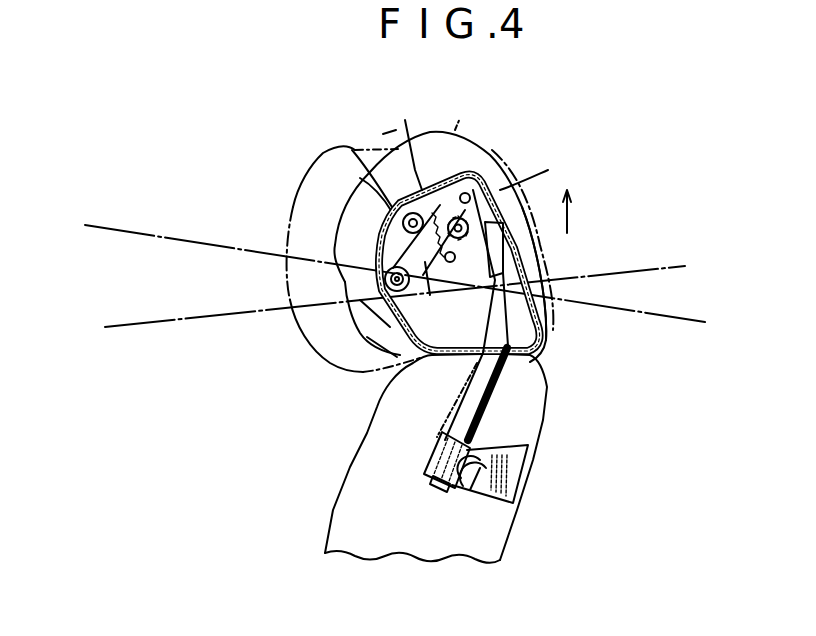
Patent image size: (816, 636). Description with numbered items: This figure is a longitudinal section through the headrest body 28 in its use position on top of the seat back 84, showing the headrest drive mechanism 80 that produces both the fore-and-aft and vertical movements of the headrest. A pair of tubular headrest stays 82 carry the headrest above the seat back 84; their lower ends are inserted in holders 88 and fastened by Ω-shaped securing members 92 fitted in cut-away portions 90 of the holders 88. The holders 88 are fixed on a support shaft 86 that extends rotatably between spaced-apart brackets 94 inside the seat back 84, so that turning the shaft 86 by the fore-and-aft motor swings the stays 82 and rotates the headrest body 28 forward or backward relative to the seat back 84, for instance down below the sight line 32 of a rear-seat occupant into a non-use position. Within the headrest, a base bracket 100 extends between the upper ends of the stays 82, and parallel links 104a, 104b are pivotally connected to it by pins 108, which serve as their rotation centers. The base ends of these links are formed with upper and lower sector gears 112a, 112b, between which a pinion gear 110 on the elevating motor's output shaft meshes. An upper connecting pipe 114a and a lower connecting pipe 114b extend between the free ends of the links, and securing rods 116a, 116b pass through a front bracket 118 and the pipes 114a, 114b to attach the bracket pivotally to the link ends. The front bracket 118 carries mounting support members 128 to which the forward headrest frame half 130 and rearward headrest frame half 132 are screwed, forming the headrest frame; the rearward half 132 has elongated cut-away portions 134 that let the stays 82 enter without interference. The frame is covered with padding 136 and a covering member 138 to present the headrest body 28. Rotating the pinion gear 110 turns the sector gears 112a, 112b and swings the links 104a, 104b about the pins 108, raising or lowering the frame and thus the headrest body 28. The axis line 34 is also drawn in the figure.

The headrest body 28 is at (558, 150).
The sight line 32 is at (648, 268).
The pivot axis line 34 is at (133, 232).
The headrest drive mechanism 80 is at (587, 390).
The headrest stays 82 is at (494, 388).
The seat back 84 is at (507, 533).
The support shaft 86 is at (478, 493).
The holders 88 is at (440, 439).
The cut-away portions 90 is at (437, 488).
The Ω-shaped securing members 92 is at (461, 490).
The brackets 94 is at (525, 452).
The base bracket 100 is at (507, 259).
The upper link member 104a is at (400, 143).
The lower link member 104b is at (450, 263).
The pins 108 is at (468, 172).
The pinion gear 110 is at (443, 180).
The upper sector gear 112a is at (520, 180).
The lower sector gear 112b is at (378, 260).
The upper connecting pipe 114a is at (352, 150).
The lower connecting pipe 114b is at (385, 350).
The securing rod 116a is at (357, 188).
The securing rod 116b is at (380, 322).
The front bracket 118 is at (385, 233).
The mounting support members 128 is at (485, 186).
The forward headrest frame half 130 is at (380, 240).
The rearward headrest frame half 132 is at (553, 318).
The elongated cut-away portions 134 is at (458, 370).
The padding 136 is at (460, 118).
The covering member 138 is at (458, 135).